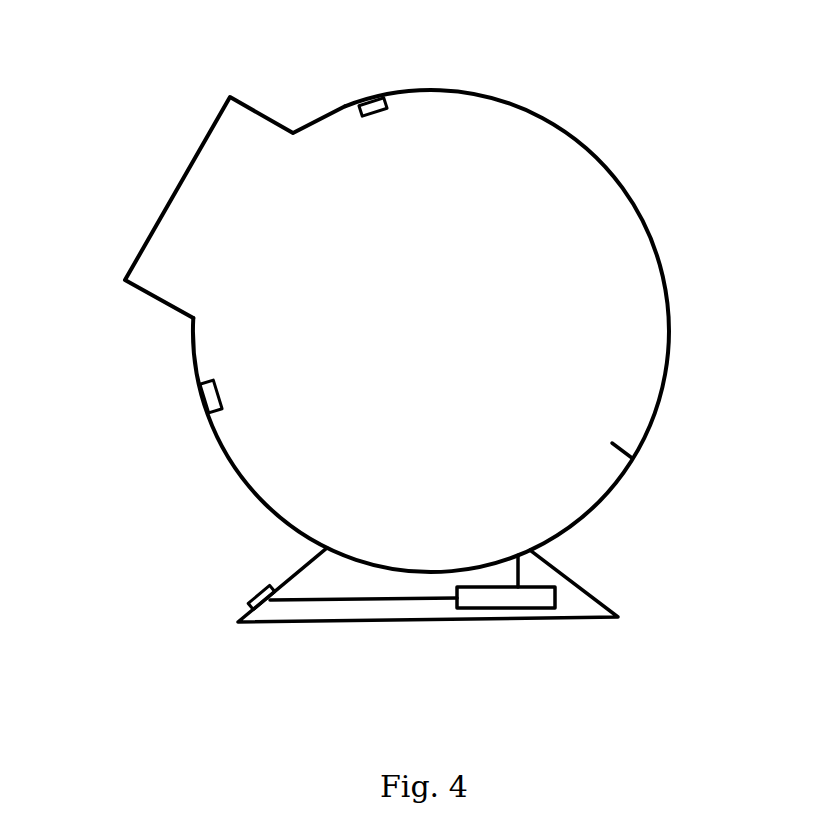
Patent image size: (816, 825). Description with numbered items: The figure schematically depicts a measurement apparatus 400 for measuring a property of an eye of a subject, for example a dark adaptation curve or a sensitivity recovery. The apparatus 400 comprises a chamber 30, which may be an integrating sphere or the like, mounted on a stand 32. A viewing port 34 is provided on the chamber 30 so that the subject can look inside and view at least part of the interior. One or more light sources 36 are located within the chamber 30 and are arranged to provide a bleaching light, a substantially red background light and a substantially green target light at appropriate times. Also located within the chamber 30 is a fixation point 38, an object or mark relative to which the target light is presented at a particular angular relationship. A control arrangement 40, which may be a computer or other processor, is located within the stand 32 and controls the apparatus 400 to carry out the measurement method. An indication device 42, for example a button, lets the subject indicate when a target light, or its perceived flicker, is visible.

The measurement apparatus 400 is at (431, 293).
The chamber 30 is at (577, 162).
The viewing port 34 is at (185, 150).
The light sources 36 is at (372, 125).
The fixation point 38 is at (637, 460).
The stand 32 is at (615, 623).
The control arrangement 40 is at (493, 600).
The indication device 42 is at (255, 595).